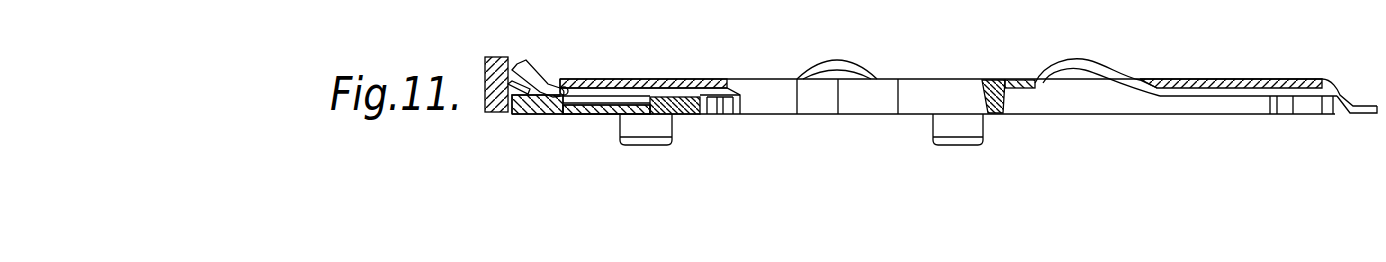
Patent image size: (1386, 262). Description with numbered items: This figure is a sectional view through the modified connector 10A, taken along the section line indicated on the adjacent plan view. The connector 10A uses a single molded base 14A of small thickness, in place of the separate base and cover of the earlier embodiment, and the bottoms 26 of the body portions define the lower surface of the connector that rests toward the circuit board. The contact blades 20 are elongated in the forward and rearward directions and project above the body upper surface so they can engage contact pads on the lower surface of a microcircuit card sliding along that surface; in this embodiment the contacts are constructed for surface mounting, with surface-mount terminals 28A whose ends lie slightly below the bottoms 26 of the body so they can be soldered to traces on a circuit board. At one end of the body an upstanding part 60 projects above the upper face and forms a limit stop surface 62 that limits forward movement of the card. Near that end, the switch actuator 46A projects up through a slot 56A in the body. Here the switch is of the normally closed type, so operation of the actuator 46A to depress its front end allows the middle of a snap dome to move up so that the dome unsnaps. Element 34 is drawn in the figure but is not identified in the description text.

The modified connector 10A is at (1002, 73).
The single molded base 14A is at (994, 117).
The contact blade 20 is at (838, 61).
The bottoms of the body portions 26 is at (777, 114).
The surface-mount terminal 28A is at (1367, 102).
The insulating substrate 34 is at (564, 116).
The switch actuator 46A is at (540, 60).
The slot 56A is at (567, 88).
The upstanding part 60 is at (489, 57).
The limit stop surface 62 is at (515, 58).